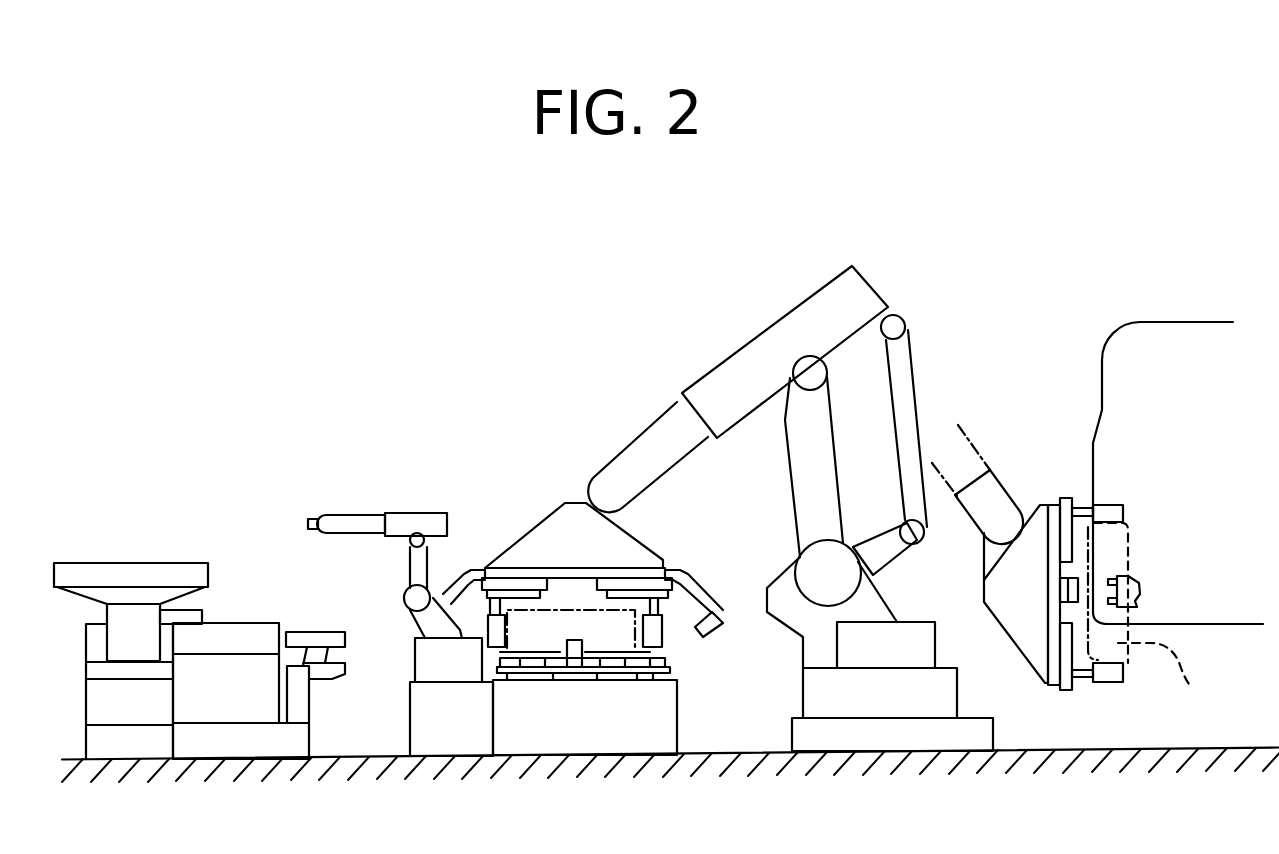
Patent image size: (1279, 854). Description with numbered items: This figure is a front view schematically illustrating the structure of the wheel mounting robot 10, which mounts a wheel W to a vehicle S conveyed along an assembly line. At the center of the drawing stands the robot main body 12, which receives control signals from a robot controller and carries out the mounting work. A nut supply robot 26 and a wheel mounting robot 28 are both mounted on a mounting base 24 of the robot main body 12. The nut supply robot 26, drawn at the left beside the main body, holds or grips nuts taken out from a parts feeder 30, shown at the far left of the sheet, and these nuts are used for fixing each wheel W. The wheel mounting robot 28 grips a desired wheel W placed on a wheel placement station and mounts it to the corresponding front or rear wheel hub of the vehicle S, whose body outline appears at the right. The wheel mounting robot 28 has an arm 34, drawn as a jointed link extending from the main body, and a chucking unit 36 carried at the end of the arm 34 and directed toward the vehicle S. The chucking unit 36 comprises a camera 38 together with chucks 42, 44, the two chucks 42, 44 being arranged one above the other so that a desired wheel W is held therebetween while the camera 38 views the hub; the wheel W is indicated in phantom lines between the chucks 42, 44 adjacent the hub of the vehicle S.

The wheel mounting robot 10 is at (485, 257).
The robot main body 12 is at (790, 473).
The mounting base 24 is at (612, 747).
The nut supply robot 26 is at (412, 518).
The wheel mounting robot 28 is at (892, 250).
The parts feeder 30 is at (253, 747).
The arm 34 is at (903, 358).
The chucking unit 36 is at (1012, 458).
The camera 38 is at (1081, 584).
The chuck 42 is at (1125, 680).
The chuck 44 is at (1117, 510).
The wheel W is at (1152, 618).
The vehicle S is at (1222, 610).